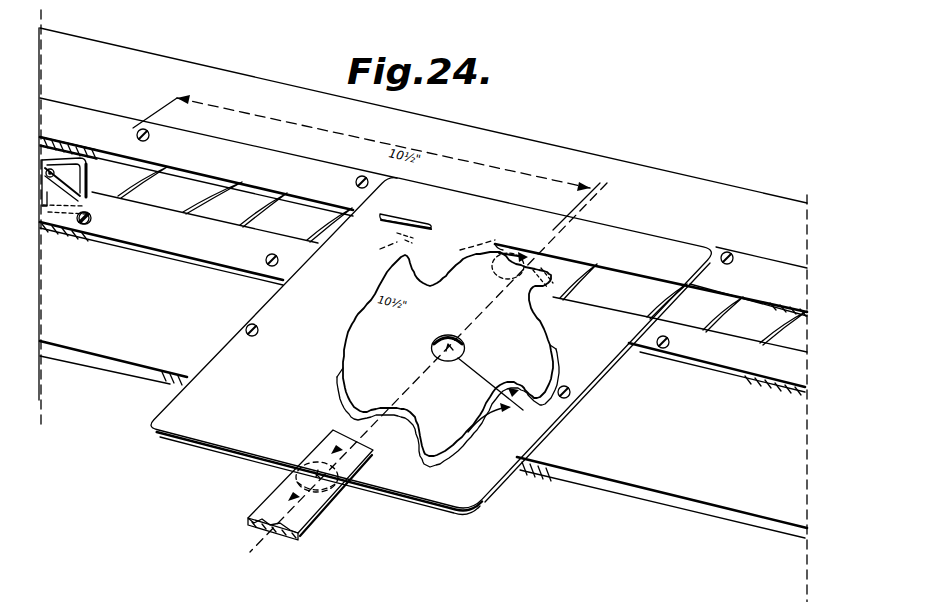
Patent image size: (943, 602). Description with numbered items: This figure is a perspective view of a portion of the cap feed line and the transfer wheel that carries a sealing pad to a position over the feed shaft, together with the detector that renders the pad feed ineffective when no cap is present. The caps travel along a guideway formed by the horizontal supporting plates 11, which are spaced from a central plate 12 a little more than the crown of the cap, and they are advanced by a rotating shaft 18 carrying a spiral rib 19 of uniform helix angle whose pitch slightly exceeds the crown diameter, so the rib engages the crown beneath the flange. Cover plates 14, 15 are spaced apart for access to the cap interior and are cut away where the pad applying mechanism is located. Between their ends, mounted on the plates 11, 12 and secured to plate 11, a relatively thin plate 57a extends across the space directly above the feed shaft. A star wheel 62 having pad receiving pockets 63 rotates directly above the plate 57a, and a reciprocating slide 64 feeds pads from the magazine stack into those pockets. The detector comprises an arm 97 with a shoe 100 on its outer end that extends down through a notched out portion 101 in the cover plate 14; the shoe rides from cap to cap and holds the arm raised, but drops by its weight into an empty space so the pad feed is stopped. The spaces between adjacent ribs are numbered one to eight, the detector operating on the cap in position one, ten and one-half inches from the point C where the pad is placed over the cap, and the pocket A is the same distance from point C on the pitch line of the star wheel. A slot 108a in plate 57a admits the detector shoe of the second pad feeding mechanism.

The central plate 12 is at (263, 97).
The horizontal supporting plates 11 is at (127, 352).
The cover plate 14 is at (231, 257).
The cover plate 15 is at (315, 198).
The rotating shaft 18 is at (246, 202).
The spiral rib 19 is at (213, 188).
The shoe 100 is at (68, 157).
The notched out portion 101 is at (90, 200).
The arm 97 is at (50, 207).
The relatively thin plate 57a is at (431, 346).
The slot 108a is at (433, 223).
The star wheel 62 is at (531, 328).
The pad receiving pockets 63 is at (410, 433).
The reciprocating slide 64 is at (284, 531).
The point C is at (524, 249).
The pocket A is at (495, 395).